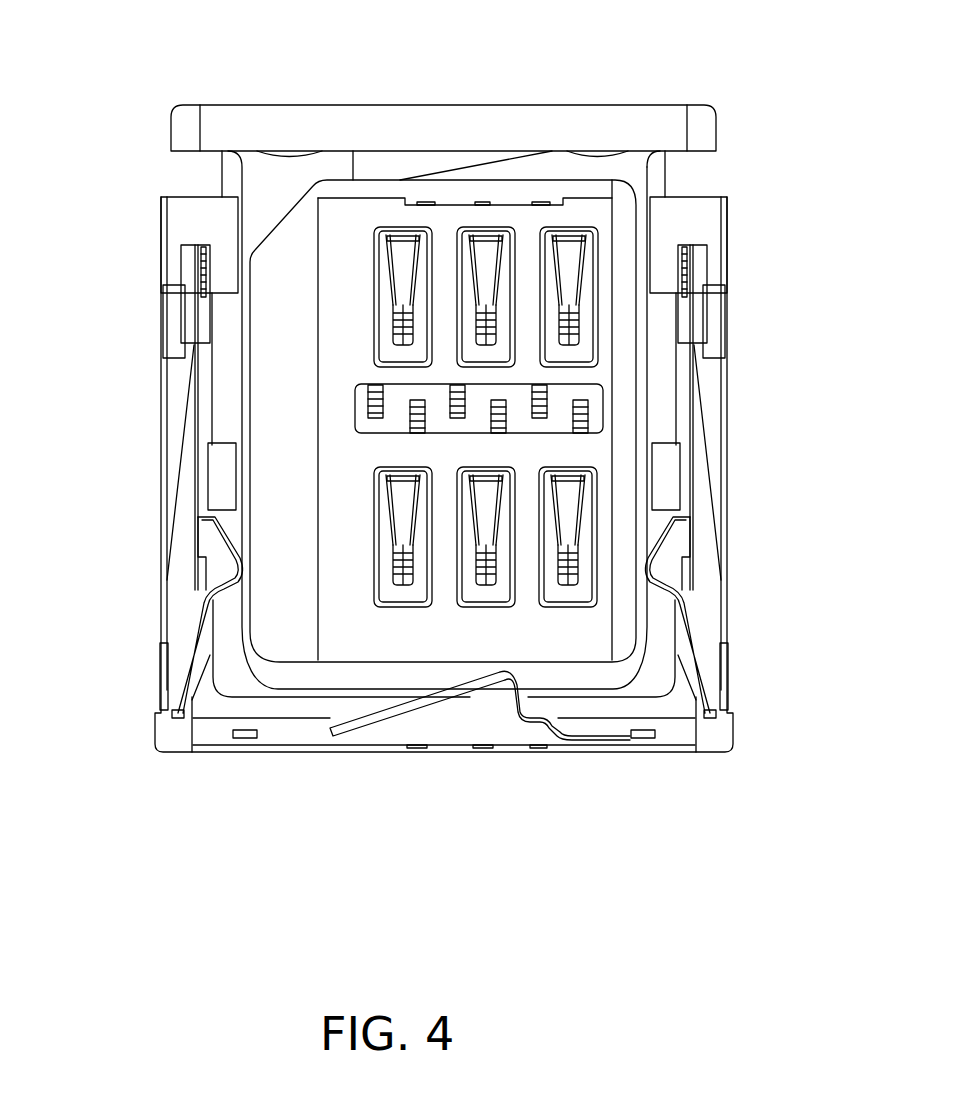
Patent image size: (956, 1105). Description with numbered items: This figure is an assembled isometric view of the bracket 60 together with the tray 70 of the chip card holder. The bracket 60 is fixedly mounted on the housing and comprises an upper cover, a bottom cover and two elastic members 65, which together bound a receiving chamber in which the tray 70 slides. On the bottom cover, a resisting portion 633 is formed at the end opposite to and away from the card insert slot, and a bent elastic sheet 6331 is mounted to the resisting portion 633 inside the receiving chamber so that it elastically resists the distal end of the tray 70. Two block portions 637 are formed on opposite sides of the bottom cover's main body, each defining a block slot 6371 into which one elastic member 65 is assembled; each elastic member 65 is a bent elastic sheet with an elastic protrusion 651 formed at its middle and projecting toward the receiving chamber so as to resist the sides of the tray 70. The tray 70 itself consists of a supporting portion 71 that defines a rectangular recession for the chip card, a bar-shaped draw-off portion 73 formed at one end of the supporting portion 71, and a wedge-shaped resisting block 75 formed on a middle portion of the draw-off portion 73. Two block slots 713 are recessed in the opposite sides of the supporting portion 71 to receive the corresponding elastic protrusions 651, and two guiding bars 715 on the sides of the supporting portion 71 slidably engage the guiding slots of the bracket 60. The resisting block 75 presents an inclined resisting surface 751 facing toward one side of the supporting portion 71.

The tray 70 is at (638, 128).
The supporting portion 71 is at (267, 177).
The draw-off portion 73 is at (337, 130).
The resisting block 75 is at (385, 173).
The inclined resisting surface 751 is at (483, 158).
The guiding bar 715 is at (660, 175).
The bracket 60 is at (722, 428).
The block portion 637 is at (165, 215).
The block slot 6371 is at (203, 279).
The elastic member 65 is at (202, 432).
The elastic protrusion 651 is at (226, 563).
The block slot 713 is at (662, 545).
The resisting portion 633 is at (385, 752).
The bent elastic sheet 6331 is at (500, 675).